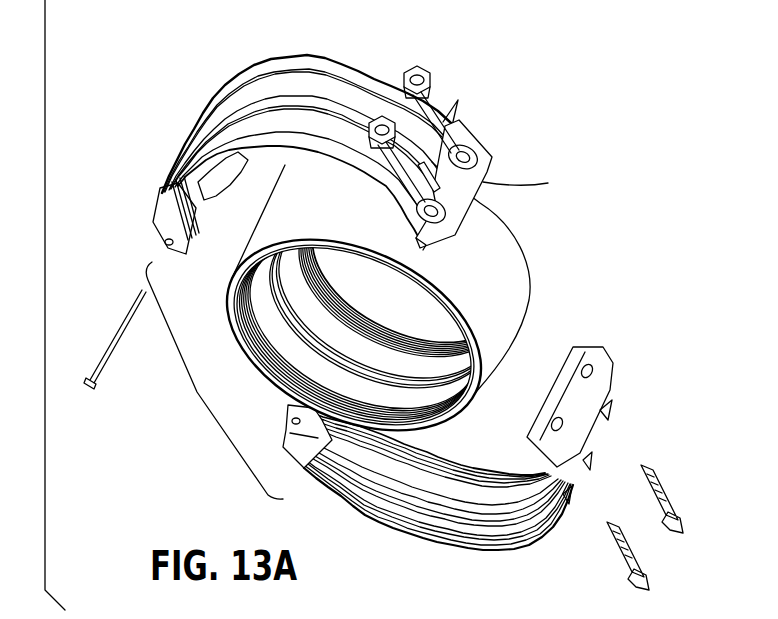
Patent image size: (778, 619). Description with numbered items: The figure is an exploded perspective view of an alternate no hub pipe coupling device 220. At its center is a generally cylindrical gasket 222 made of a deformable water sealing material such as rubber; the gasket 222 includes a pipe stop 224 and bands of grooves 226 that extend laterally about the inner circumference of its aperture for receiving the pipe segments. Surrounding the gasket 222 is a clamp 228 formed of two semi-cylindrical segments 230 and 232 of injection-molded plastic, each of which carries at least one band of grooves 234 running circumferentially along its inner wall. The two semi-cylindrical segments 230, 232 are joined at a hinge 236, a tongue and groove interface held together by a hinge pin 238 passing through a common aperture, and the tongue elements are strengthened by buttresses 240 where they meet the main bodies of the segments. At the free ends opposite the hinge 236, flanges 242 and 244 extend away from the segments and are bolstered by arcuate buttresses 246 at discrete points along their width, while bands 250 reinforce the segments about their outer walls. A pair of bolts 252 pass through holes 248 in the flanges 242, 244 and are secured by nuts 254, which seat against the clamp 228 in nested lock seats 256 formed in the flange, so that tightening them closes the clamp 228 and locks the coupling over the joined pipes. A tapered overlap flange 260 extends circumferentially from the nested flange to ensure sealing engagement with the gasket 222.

The pipe coupling device 220 is at (189, 447).
The gasket 222 is at (391, 315).
The pipe stop 224 is at (310, 343).
The gasket seal ring 226 is at (263, 353).
The clamp 228 is at (348, 144).
The semi-cylindrical segment 230 is at (354, 38).
The semi-cylindrical segment 232 is at (388, 335).
The band of grooves 234 is at (442, 530).
The hinge 236 is at (196, 394).
The hinge pin 238 is at (87, 390).
The buttresses 240 is at (310, 477).
The flange 242 is at (475, 203).
The flange 244 is at (610, 367).
The arcuate buttresses 246 is at (543, 312).
The bolt hole 248 is at (584, 366).
The bands 250 is at (316, 128).
The bolts 252 is at (660, 480).
The nuts 254 is at (383, 116).
The nested lock seats 256 is at (463, 195).
The tapered overlap flange 260 is at (423, 247).